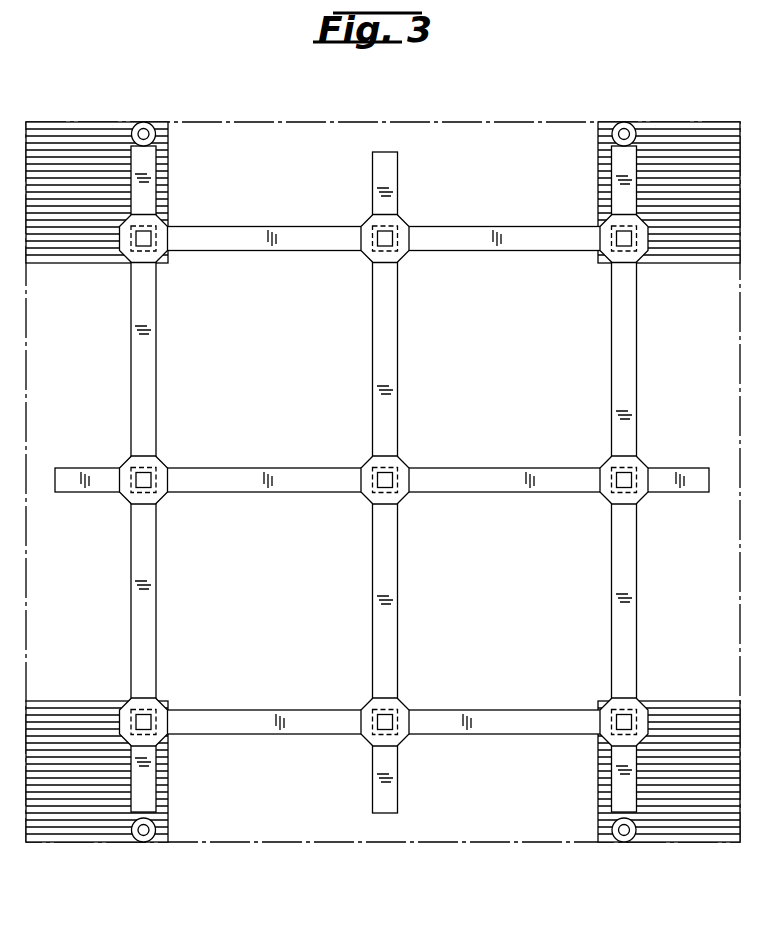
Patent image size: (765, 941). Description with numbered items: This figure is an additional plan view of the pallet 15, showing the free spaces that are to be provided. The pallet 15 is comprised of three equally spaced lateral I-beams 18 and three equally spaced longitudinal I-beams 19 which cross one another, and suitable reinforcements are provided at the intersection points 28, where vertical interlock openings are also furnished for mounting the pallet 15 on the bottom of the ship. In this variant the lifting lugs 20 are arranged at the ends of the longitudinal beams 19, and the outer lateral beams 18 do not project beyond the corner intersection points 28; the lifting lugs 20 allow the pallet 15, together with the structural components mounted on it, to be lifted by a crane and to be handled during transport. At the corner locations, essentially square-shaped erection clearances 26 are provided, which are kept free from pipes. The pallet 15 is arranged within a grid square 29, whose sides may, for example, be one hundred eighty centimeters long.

The pallet 15 is at (382, 479).
The lateral I-beams 18 is at (523, 233).
The longitudinal I-beams 19 is at (148, 370).
The lifting lugs 20 is at (143, 122).
The erection clearances 26 is at (87, 242).
The intersection points 28 is at (167, 259).
The grid square 29 is at (497, 844).